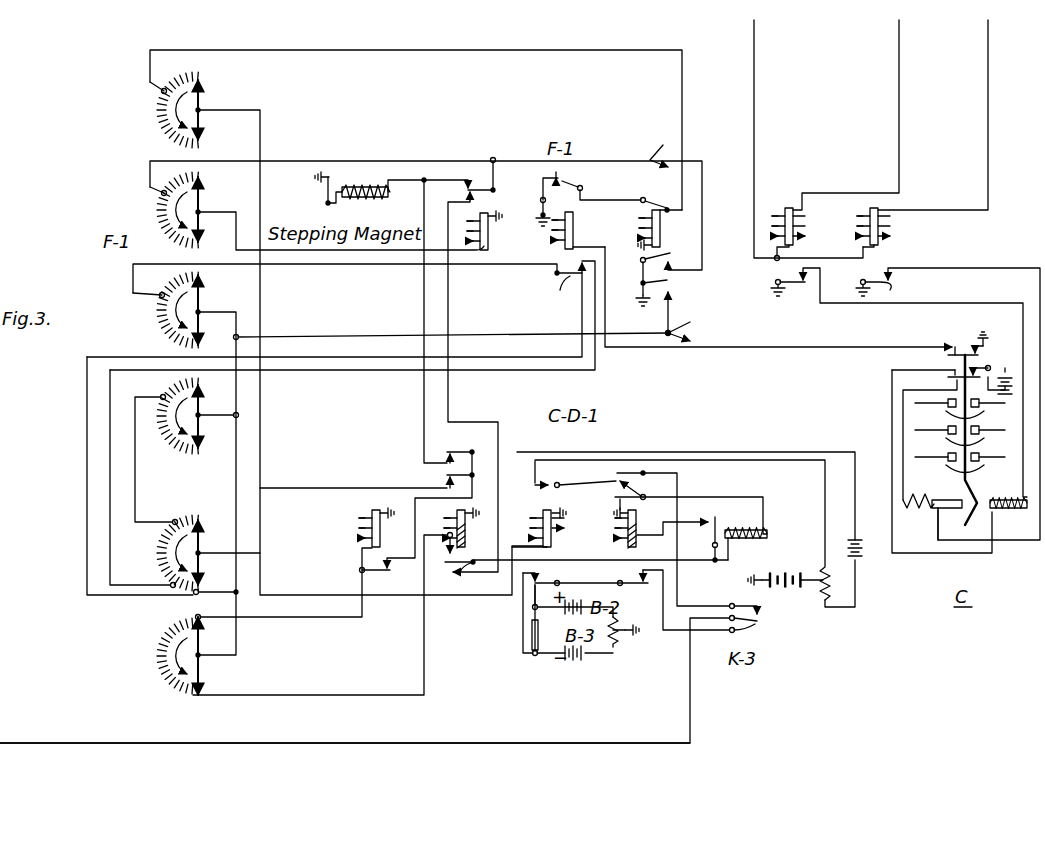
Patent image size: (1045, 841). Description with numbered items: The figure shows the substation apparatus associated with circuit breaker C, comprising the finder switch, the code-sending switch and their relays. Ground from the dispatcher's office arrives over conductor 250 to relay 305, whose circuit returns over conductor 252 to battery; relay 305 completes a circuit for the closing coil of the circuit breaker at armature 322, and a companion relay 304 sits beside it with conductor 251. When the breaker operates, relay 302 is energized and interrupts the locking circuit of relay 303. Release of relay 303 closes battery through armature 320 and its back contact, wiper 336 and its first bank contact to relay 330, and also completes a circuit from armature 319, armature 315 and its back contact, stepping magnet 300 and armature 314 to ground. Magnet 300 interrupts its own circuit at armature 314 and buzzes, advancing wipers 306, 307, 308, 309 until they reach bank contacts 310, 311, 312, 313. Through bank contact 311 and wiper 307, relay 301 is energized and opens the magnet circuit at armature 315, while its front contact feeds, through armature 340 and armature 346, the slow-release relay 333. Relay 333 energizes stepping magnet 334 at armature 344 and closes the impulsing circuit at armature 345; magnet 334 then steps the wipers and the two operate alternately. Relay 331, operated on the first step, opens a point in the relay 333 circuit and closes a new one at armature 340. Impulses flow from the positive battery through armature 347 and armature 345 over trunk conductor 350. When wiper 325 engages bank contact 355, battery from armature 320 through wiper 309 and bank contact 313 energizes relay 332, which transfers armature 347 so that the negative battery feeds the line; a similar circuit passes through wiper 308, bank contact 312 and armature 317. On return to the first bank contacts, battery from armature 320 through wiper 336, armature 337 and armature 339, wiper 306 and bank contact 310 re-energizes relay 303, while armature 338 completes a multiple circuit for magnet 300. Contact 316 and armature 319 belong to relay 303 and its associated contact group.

The conductor 250 is at (753, 36).
The conductor 251 is at (897, 36).
The conductor 252 is at (986, 36).
The stepping magnet 300 is at (368, 186).
The relay 301 is at (490, 236).
The relay 302 is at (575, 236).
The relay 303 is at (662, 236).
The relay 304 is at (798, 238).
The relay 305 is at (878, 236).
The wiper 306 is at (200, 104).
The wiper 307 is at (200, 208).
The wiper 308 is at (200, 310).
The wiper 309 is at (200, 412).
The bank contact 310 is at (161, 91).
The bank contact 311 is at (161, 193).
The bank contact 312 is at (159, 297).
The bank contact 313 is at (162, 396).
The armature 314 is at (322, 191).
The armature 315 is at (490, 160).
The contact 316 is at (583, 188).
The armature 317 is at (560, 290).
The armature 319 is at (660, 200).
The armature 320 is at (643, 292).
The armature 322 is at (892, 288).
The wiper 325 is at (200, 549).
The relay 330 is at (366, 528).
The relay 331 is at (457, 520).
The relay 332 is at (543, 526).
The slow-release relay 333 is at (628, 536).
The stepping magnet 334 is at (748, 528).
The wiper 336 is at (200, 674).
The armature 337 is at (372, 574).
The armature 338 is at (466, 450).
The armature 339 is at (445, 476).
The armature 340 is at (462, 572).
The armature 344 is at (640, 475).
The armature 345 is at (640, 582).
The armature 346 is at (713, 538).
The armature 347 is at (560, 580).
The trunk conductor 350 is at (190, 594).
The bank contact 355 is at (176, 522).